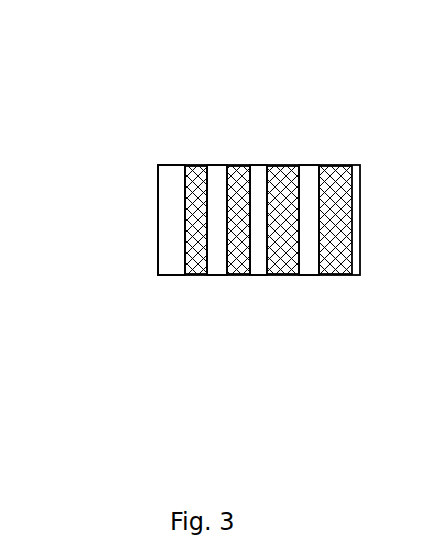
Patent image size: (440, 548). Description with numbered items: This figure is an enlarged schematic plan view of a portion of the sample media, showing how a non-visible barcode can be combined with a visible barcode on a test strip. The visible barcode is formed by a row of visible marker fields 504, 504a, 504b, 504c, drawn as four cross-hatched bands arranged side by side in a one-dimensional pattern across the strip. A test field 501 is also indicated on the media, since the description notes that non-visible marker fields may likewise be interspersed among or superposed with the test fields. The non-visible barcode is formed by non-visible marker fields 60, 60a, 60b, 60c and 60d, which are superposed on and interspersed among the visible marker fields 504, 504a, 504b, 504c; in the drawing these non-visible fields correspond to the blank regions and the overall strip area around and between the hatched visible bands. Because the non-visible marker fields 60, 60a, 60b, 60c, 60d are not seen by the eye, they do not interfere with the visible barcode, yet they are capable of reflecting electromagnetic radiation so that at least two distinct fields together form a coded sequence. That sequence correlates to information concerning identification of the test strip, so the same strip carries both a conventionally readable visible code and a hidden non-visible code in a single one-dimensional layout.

The non-visible marker field 60 is at (360, 275).
The non-visible marker field 60a is at (305, 275).
The non-visible marker field 60b is at (257, 275).
The non-visible marker field 60c is at (208, 275).
The non-visible marker field 60d is at (177, 254).
The test field 501 is at (359, 147).
The visible marker field 504 is at (342, 165).
The visible marker field 504a is at (286, 165).
The visible marker field 504b is at (231, 165).
The visible marker field 504c is at (197, 165).